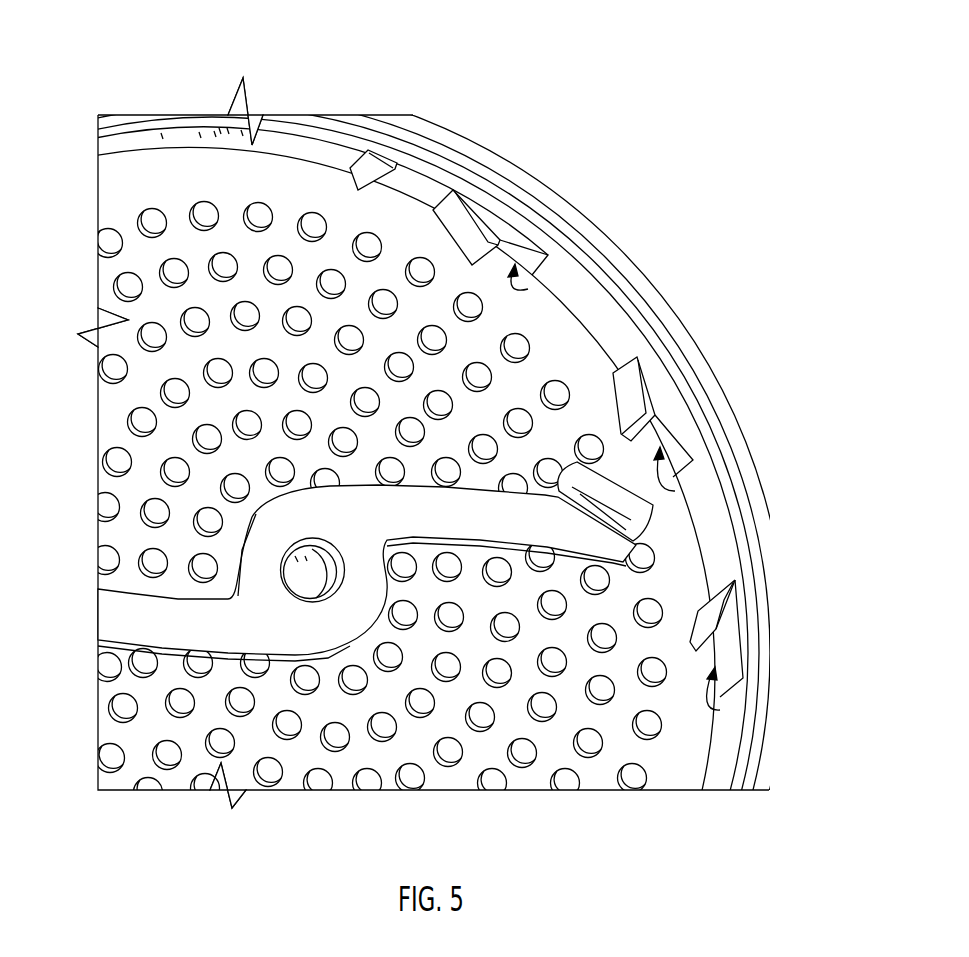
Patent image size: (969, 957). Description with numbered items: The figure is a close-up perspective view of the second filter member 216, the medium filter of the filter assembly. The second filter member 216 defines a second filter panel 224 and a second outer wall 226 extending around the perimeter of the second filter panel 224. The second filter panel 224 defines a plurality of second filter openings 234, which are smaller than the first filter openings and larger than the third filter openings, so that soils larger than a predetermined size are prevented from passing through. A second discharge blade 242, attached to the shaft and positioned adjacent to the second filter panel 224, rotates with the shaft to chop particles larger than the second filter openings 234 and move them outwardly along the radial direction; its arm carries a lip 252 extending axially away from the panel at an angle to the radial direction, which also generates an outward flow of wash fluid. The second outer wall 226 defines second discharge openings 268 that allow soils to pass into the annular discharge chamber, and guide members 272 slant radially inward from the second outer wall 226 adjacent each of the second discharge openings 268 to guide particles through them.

The second filter member 216 is at (426, 481).
The second filter panel 224 is at (340, 250).
The second outer wall 226 is at (441, 130).
The second filter openings 234 is at (262, 212).
The second discharge blade 242 is at (465, 500).
The lip 252 is at (655, 502).
The second discharge openings 268 is at (532, 277).
The guide members 272 is at (470, 243).